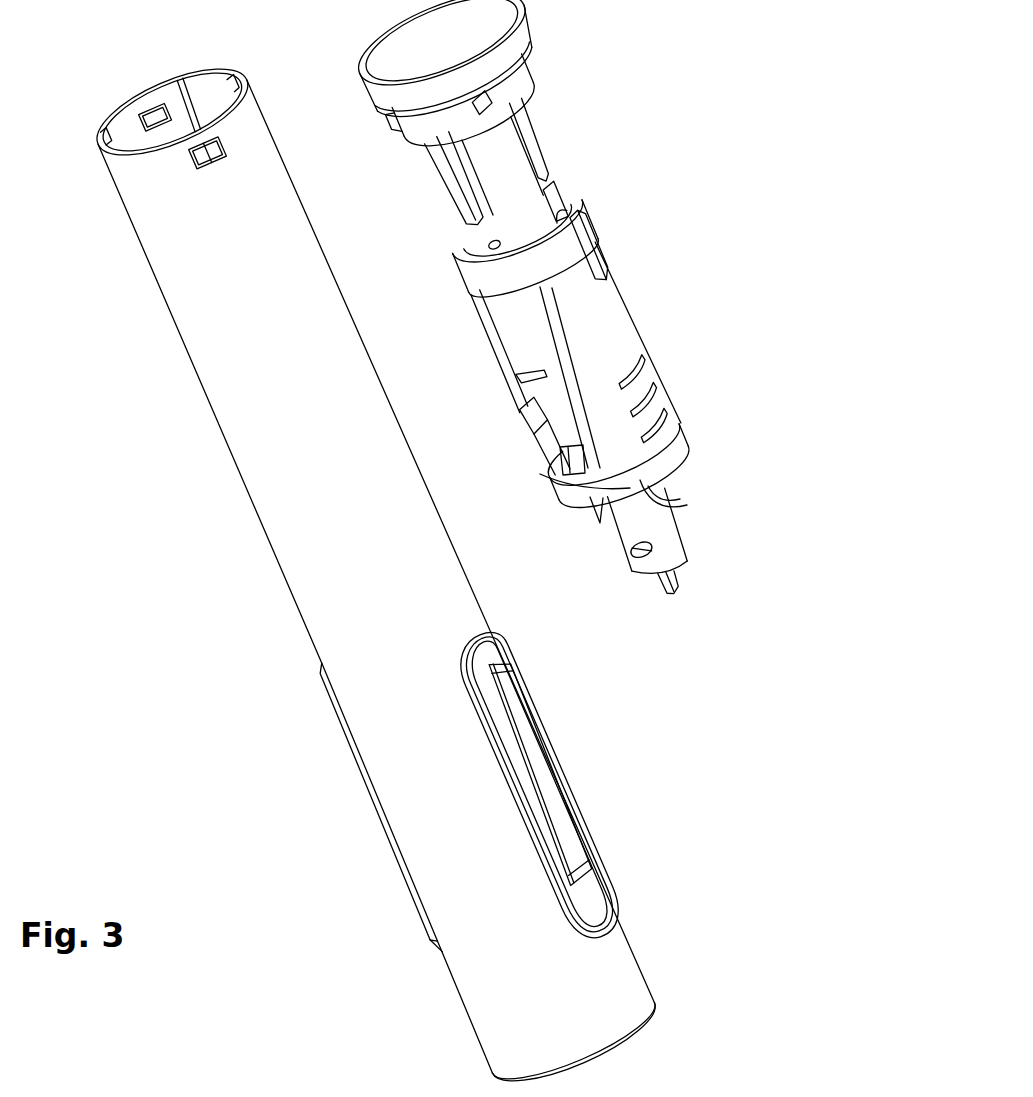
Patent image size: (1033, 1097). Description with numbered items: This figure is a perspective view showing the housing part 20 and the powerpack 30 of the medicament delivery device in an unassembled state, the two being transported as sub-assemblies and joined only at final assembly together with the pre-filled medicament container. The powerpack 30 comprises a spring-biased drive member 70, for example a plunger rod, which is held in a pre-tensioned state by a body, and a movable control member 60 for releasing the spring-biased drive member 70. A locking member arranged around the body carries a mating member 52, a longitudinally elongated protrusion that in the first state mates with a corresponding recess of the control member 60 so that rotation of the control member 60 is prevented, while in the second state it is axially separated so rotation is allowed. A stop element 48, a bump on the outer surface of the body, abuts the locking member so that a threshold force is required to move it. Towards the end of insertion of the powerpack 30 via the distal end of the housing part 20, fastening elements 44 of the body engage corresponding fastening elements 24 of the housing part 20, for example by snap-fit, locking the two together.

The housing part 20 is at (370, 528).
The fastening elements 24 is at (113, 172).
The powerpack 30 is at (850, 545).
The fastening elements 44 is at (482, 113).
The stop element 48 is at (490, 243).
The mating member 52 is at (596, 262).
The control member 60 is at (617, 361).
The spring-biased drive member 70 is at (636, 537).